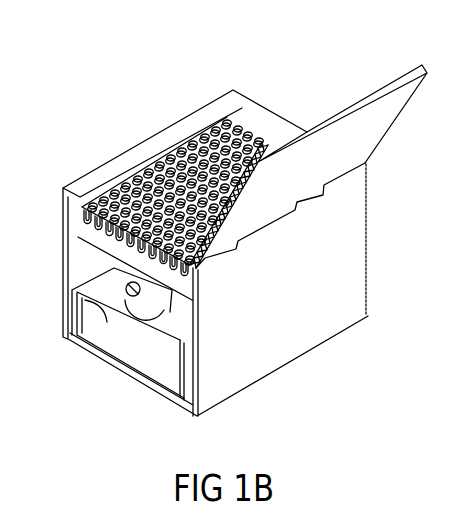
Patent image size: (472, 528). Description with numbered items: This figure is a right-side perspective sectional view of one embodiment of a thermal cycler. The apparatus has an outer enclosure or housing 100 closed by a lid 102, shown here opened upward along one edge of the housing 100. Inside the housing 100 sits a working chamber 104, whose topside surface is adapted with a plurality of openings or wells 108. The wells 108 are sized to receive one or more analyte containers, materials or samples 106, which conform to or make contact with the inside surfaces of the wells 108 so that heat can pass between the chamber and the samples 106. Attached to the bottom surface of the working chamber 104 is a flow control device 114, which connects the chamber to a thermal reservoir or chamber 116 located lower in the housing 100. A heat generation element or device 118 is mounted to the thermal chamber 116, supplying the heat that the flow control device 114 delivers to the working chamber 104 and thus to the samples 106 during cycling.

The housing 100 is at (79, 254).
The lid 102 is at (381, 113).
The working chamber 104 is at (198, 272).
The samples 106 is at (197, 147).
The wells 108 is at (136, 198).
The flow control device 114 is at (144, 306).
The thermal reservoir or chamber 116 is at (183, 337).
The heat generation element 118 is at (112, 320).